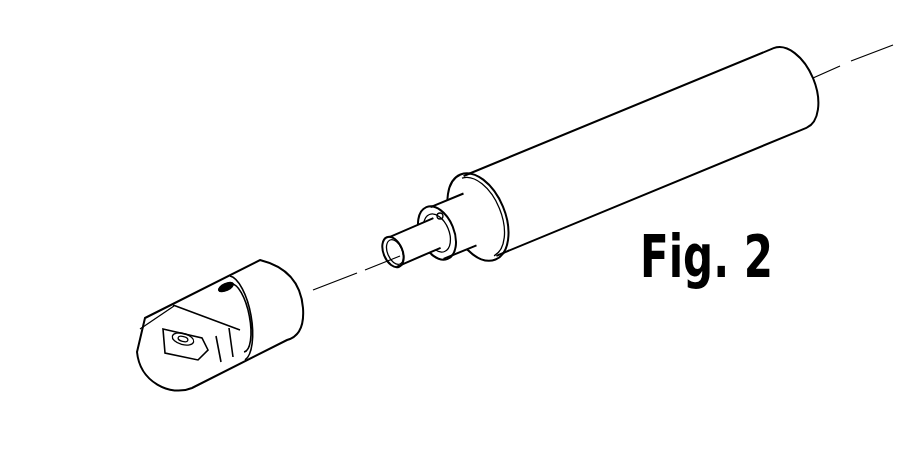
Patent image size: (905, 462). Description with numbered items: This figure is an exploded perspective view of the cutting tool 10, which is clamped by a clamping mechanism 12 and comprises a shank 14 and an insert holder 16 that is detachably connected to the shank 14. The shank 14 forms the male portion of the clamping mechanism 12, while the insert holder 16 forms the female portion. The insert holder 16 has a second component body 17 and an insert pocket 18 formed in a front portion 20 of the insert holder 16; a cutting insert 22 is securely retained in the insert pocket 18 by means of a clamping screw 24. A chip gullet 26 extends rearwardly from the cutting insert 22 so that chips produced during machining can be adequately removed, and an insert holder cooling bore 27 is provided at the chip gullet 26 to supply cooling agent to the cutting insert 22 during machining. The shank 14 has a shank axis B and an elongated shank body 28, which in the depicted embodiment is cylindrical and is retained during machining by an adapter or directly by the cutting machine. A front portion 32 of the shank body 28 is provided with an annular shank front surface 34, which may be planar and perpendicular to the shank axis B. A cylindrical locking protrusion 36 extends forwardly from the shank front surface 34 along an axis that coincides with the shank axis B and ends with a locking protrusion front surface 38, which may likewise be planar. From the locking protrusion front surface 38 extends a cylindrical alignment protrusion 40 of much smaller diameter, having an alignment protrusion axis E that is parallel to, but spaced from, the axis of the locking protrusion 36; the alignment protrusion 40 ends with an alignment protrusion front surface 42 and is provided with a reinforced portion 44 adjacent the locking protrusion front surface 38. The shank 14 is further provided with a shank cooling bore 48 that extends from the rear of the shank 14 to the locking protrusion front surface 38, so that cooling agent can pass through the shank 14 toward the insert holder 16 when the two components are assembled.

The cutting tool 10 is at (512, 75).
The clamping mechanism 12 is at (318, 310).
The shank 14 is at (632, 80).
The insert holder 16 is at (232, 203).
The second component body 17 is at (258, 267).
The insert pocket 18 is at (168, 330).
The front portion 20 is at (115, 340).
The cutting insert 22 is at (170, 378).
The clamping screw 24 is at (180, 327).
The chip gullet 26 is at (208, 303).
The insert holder cooling bore 27 is at (227, 293).
The shank body 28 is at (703, 90).
The front portion 32 is at (382, 176).
The shank front surface 34 is at (452, 188).
The locking protrusion 36 is at (484, 258).
The locking protrusion front surface 38 is at (417, 221).
The alignment protrusion 40 is at (421, 252).
The alignment protrusion front surface 42 is at (393, 260).
The reinforced portion 44 is at (452, 255).
The shank cooling bore 48 is at (437, 212).
The shank axis B is at (838, 63).
The alignment protrusion axis E is at (357, 267).